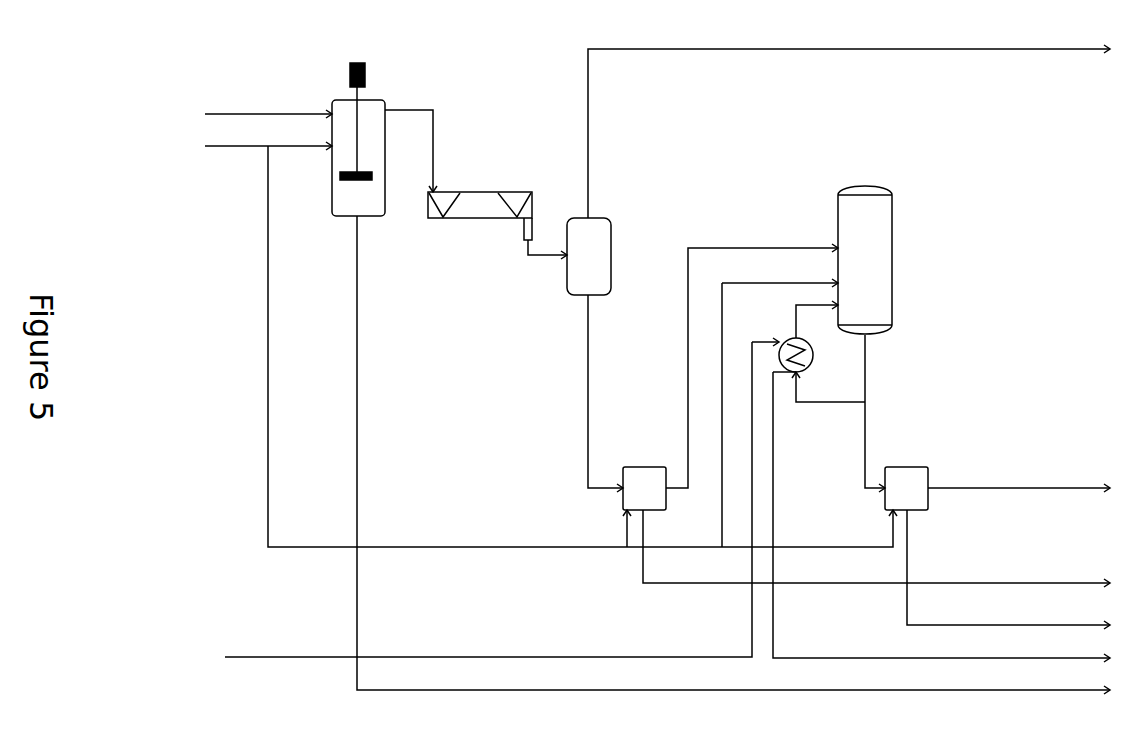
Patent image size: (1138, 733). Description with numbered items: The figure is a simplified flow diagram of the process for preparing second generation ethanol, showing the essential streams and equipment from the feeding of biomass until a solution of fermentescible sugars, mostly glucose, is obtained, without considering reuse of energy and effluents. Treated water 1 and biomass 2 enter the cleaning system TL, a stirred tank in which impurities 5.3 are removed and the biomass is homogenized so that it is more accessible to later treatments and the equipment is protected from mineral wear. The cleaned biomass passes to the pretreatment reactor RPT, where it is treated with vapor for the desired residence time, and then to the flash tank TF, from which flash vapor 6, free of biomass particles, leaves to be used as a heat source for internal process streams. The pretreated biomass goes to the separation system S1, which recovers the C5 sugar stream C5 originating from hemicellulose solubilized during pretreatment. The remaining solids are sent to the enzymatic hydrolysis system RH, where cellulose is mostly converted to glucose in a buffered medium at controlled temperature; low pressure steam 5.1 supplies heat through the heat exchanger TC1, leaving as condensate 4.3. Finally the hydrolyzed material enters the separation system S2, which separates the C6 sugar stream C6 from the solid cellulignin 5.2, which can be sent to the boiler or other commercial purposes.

The treated water 1 is at (551, 336).
The biomass 2 is at (268, 106).
The flash vapor 6 is at (849, 123).
The low pressure steam 5.1 is at (488, 499).
The cellulignin 5.2 is at (1008, 569).
The impurities 5.3 is at (733, 455).
The condensate 4.3 is at (941, 517).
The C5 sugar stream C5 is at (876, 548).
The C6 sugar stream C6 is at (1019, 477).
The cleaning system TL is at (358, 139).
The pretreatment reactor RPT is at (475, 207).
The flash tank TF is at (595, 355).
The enzymatic hydrolysis system RH is at (807, 366).
The heat exchanger TC1 is at (808, 370).
The separation system S1 is at (730, 377).
The separation system S2 is at (906, 488).